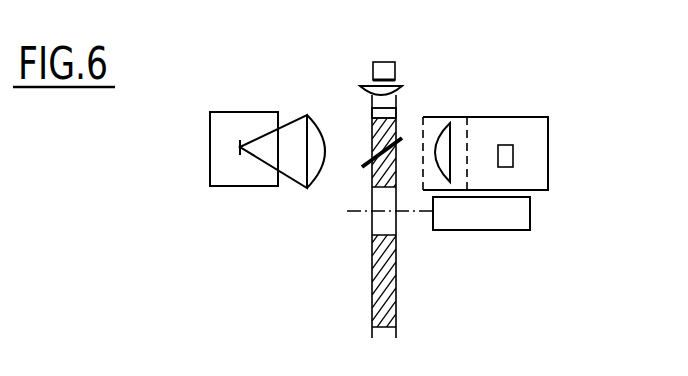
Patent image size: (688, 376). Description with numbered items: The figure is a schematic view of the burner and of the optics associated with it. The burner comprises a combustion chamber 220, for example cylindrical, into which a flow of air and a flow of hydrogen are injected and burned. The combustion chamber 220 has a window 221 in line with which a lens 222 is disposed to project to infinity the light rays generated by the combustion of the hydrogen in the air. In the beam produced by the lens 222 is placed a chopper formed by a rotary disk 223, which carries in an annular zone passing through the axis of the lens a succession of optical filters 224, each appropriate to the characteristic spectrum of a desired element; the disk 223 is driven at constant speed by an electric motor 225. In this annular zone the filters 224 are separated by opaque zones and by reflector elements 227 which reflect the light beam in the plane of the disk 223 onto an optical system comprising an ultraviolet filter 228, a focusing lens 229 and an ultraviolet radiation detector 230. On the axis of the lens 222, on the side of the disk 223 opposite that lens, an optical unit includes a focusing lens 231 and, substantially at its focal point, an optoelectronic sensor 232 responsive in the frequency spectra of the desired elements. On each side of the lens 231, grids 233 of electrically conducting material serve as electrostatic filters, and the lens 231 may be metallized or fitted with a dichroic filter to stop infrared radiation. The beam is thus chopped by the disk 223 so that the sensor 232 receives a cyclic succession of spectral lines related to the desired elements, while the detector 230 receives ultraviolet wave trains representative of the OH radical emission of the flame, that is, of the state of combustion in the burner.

The combustion chamber 220 is at (222, 187).
The window 221 is at (277, 152).
The lens 222 is at (318, 168).
The rotary disk 223 is at (362, 283).
The optical filters 224 is at (385, 288).
The electric motor 225 is at (513, 222).
The reflector elements 227 is at (373, 136).
The ultraviolet filter 228 is at (392, 115).
The focusing lens 229 is at (395, 90).
The ultraviolet radiation detector 230 is at (382, 73).
The focusing lens 231 is at (442, 173).
The optoelectronic sensor 232 is at (505, 148).
The grids 233 is at (468, 132).